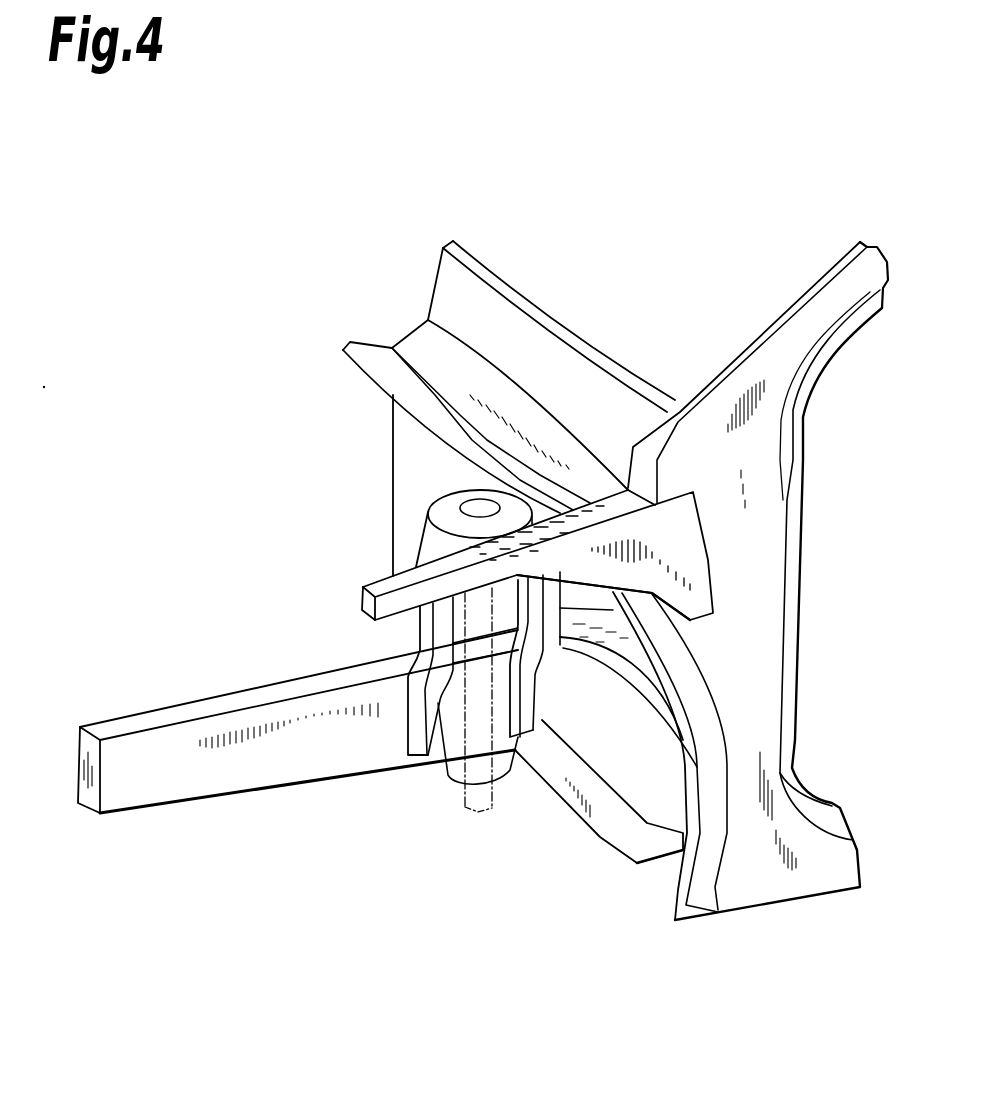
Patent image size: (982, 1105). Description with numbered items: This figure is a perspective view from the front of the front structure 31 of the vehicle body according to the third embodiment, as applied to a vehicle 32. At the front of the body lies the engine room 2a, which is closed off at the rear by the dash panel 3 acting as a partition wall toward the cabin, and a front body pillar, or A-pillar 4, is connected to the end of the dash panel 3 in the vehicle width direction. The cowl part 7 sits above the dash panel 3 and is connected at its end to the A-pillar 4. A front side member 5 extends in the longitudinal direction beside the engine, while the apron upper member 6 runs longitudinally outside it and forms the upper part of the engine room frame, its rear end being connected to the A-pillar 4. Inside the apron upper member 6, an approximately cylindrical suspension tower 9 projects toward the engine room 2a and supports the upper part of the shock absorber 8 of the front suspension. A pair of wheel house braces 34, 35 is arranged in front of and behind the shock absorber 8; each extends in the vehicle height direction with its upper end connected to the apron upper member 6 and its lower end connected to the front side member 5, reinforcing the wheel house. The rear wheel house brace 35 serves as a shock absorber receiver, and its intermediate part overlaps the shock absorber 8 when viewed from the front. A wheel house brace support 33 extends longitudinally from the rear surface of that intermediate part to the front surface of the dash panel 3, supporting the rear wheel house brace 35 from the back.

The engine room 2a is at (299, 633).
The dash panel 3 is at (410, 448).
The front body pillar (A-pillar) 4 is at (760, 593).
The front side member 5 is at (165, 783).
The apron upper member 6 is at (378, 584).
The cowl part 7 is at (507, 298).
The shock absorber 8 is at (473, 723).
The suspension tower 9 is at (437, 538).
The front structure of the vehicle body 31 is at (228, 407).
The vehicle 32 is at (155, 284).
The wheel house brace support 33 is at (613, 643).
The front wheel house brace 34 is at (420, 678).
The rear wheel house brace 35 is at (548, 650).